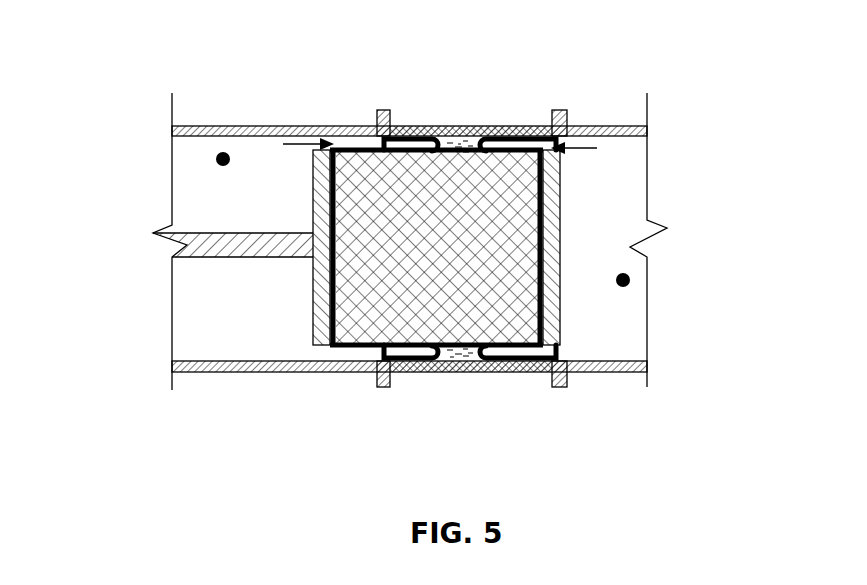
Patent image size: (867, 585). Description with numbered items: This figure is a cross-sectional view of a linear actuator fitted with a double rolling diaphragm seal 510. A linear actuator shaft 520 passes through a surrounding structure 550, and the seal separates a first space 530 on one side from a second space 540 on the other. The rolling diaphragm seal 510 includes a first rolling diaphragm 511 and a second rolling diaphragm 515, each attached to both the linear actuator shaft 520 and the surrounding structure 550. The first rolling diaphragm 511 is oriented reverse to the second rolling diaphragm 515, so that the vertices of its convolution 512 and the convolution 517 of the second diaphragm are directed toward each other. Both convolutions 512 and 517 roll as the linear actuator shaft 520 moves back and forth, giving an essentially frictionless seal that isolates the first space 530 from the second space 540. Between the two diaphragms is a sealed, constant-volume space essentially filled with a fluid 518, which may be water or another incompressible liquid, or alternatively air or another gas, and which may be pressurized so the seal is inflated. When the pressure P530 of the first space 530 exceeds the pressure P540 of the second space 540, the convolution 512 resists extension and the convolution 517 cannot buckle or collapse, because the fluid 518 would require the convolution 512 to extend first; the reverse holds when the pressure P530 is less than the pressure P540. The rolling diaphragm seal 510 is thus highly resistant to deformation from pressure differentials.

The rolling diaphragm seal 510 is at (493, 125).
The first rolling diaphragm 511 is at (287, 149).
The convolution 512 is at (450, 134).
The second rolling diaphragm 515 is at (594, 153).
The convolution 517 is at (471, 136).
The fluid 518 is at (461, 143).
The linear actuator shaft 520 is at (292, 211).
The first space 530 is at (260, 310).
The second space 540 is at (613, 253).
The surrounding structure 550 is at (302, 125).
The pressure of the first space P530 is at (216, 160).
The pressure of the second space P540 is at (630, 280).